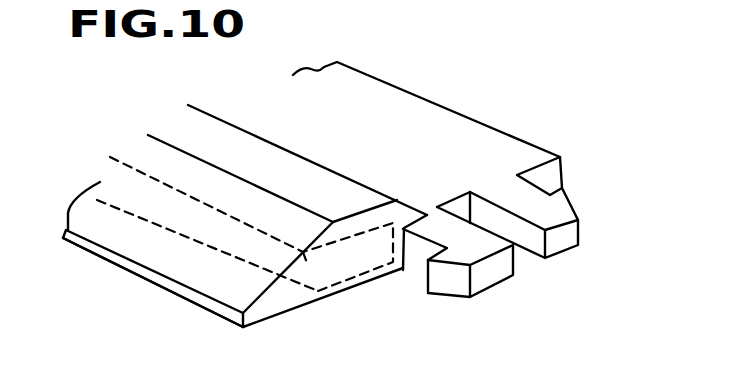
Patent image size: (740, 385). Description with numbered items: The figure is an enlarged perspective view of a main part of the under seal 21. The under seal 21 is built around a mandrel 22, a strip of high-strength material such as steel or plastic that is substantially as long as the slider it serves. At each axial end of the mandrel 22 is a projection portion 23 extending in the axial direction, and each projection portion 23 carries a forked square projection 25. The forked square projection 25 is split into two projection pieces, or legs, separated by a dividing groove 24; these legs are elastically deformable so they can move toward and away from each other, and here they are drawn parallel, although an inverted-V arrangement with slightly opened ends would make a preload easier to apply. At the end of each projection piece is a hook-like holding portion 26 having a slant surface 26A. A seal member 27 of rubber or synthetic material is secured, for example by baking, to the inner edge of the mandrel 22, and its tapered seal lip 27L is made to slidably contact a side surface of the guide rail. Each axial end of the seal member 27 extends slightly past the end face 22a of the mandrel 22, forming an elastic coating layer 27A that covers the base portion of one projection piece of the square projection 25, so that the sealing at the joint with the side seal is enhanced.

The under seal 21 is at (418, 86).
The mandrel 22 is at (460, 132).
The end face of the mandrel 22a is at (308, 267).
The projection portion 23 is at (578, 196).
The dividing groove 24 is at (492, 226).
The forked square projection 25 is at (500, 271).
The hook-like holding portion 26 is at (433, 250).
The slant surface 26A is at (448, 281).
The seal member 27 is at (117, 238).
The elastic coating layer 27A is at (273, 305).
The tapered seal lip 27L is at (160, 285).